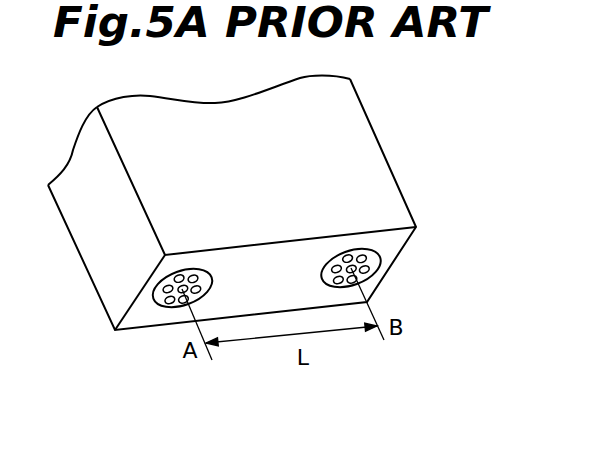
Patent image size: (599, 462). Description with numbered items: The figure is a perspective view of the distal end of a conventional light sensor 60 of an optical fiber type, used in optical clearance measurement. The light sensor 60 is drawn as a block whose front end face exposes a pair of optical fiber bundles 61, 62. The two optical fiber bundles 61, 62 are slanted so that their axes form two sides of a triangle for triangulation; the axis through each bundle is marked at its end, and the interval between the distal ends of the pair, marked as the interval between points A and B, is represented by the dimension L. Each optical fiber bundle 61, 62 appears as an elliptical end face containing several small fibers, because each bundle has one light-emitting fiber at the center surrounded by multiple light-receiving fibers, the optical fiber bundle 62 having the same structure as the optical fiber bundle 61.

The light sensor 60 is at (362, 158).
The optical fiber bundle 61 is at (162, 308).
The optical fiber bundle 62 is at (380, 267).